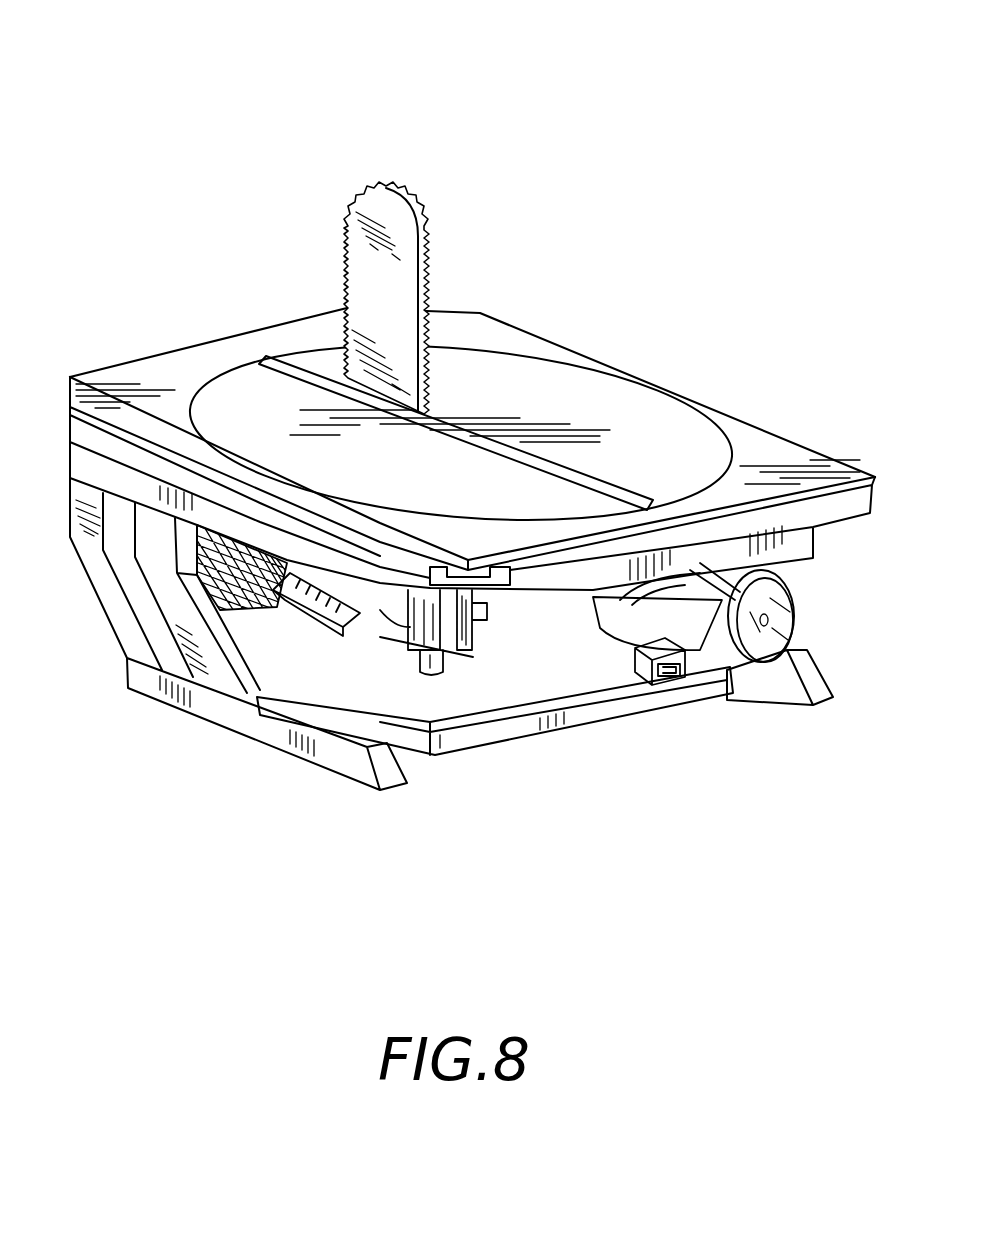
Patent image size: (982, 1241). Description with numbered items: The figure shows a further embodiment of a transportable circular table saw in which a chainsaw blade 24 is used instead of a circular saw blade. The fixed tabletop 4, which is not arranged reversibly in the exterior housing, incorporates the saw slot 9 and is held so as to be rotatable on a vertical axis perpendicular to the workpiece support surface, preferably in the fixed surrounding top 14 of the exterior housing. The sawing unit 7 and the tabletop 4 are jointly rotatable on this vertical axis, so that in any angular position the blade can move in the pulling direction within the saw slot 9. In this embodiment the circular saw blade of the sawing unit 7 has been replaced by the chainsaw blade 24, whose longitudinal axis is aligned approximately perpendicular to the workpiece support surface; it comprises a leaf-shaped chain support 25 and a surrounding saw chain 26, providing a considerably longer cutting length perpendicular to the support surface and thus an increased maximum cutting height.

The chainsaw blade 24 is at (494, 215).
The leaf-shaped chain support 25 is at (427, 227).
The saw chain 26 is at (427, 276).
The tabletop 4 is at (547, 387).
The saw slot 9 is at (587, 467).
The surrounding top 14 is at (773, 457).
The sawing unit 7 is at (353, 595).